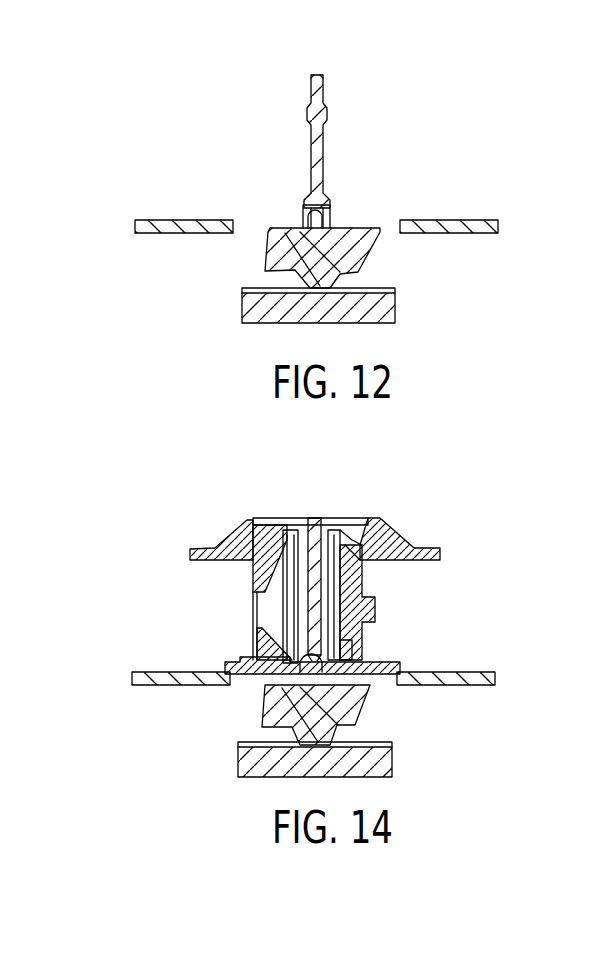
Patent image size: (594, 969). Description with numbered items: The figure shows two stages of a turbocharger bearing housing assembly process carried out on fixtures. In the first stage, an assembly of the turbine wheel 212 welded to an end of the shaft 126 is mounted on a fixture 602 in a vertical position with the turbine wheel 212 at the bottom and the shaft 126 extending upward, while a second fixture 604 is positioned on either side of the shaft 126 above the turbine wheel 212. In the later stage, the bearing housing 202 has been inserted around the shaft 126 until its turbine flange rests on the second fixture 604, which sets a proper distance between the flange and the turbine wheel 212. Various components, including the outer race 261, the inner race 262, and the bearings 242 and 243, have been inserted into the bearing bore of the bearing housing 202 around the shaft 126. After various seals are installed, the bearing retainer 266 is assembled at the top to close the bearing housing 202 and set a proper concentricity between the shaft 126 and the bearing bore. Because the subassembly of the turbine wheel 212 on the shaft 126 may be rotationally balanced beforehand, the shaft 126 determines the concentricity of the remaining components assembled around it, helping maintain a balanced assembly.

In FIG. 12, the shaft 126 is at (318, 143).
In FIG. 14, the shaft 126 is at (313, 610).
In FIG. 12, the turbine wheel 212 is at (330, 250).
In FIG. 14, the turbine wheel 212 is at (323, 708).
In FIG. 12, the fixture 602 is at (392, 313).
In FIG. 14, the fixture 602 is at (390, 768).
In FIG. 12, the second fixture 604 is at (487, 228).
In FIG. 14, the second fixture 604 is at (482, 677).
In FIG. 14, the bearing housing 202 is at (362, 640).
In FIG. 14, the bearing 242 is at (385, 555).
In FIG. 14, the bearing 243 is at (345, 665).
In FIG. 14, the outer race 261 is at (290, 602).
In FIG. 14, the inner race 262 is at (290, 625).
In FIG. 14, the bearing retainer 266 is at (352, 538).